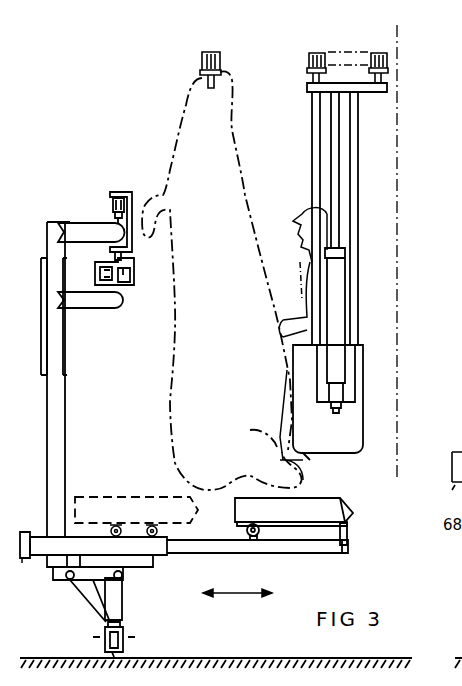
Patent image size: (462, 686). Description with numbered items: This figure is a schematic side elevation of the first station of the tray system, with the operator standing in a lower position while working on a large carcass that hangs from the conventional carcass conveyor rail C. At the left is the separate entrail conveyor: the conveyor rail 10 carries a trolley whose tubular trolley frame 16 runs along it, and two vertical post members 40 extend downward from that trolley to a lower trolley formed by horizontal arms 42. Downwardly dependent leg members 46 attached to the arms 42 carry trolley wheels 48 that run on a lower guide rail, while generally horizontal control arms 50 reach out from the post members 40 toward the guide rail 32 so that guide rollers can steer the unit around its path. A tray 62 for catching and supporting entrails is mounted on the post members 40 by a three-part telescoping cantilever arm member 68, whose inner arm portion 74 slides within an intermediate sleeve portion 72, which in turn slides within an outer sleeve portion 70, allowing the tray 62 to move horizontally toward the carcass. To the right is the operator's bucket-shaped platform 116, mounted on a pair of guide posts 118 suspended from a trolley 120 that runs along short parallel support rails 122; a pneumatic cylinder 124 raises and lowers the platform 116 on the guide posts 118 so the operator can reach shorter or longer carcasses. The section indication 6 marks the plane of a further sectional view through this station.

The conveyor rail 10 is at (112, 203).
The trolley frame 16 is at (80, 227).
The guide rail 32 is at (133, 272).
The vertical post members 40 is at (58, 408).
The horizontal arms 42 is at (93, 577).
The leg members 46 is at (122, 595).
The trolley wheels 48 is at (123, 627).
The control arms 50 is at (97, 310).
The trays 62 is at (353, 510).
The telescoping cantilever arm members 68 is at (22, 563).
The outer sleeve portion 70 is at (153, 552).
The intermediate sleeve portion 72 is at (220, 547).
The inner arm portion 74 is at (310, 545).
The platform 116 is at (365, 372).
The guide posts 118 is at (358, 163).
The trolley 120 is at (368, 93).
The support rails 122 is at (315, 53).
The pneumatic cylinder 124 is at (337, 287).
The section line 6- 6 is at (347, 38).
The carcass conveyor rail C is at (212, 48).